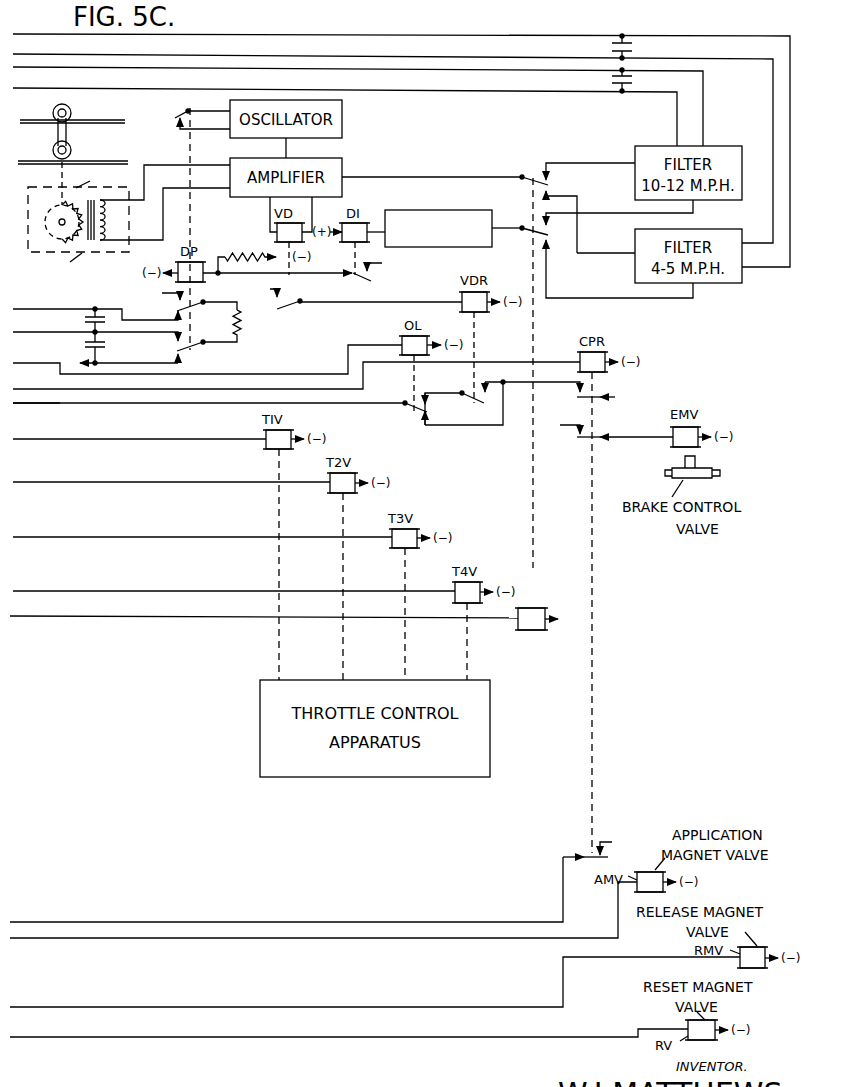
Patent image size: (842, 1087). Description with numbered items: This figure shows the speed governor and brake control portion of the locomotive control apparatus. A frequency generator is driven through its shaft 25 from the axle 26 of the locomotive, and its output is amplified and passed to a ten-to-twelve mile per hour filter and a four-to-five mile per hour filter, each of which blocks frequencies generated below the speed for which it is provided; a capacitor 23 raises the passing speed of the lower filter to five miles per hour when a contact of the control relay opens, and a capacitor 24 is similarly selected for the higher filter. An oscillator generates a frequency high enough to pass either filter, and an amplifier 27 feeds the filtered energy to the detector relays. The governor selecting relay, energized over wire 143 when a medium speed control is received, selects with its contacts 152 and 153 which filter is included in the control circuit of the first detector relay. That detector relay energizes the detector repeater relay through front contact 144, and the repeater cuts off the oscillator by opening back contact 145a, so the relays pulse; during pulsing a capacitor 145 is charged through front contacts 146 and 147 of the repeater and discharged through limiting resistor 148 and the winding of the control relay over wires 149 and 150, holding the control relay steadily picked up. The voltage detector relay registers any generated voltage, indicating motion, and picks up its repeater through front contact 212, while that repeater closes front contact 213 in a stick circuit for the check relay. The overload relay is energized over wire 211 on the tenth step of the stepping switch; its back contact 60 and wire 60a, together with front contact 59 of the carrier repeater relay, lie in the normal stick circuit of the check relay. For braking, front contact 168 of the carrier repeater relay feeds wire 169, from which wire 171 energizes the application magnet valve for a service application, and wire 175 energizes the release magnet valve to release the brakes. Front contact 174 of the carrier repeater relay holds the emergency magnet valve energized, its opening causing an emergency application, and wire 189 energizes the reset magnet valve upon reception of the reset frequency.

The capacitor 23 is at (628, 50).
The capacitor 24 is at (628, 84).
The shaft 25 is at (56, 174).
The axle 26 is at (68, 134).
The amplifier 27 is at (415, 209).
The front contact of carrier repeater relay CPR 59 is at (596, 393).
The back contact of overload relay OL 60 is at (393, 411).
The wire 60a is at (20, 404).
The wire 143 is at (22, 621).
The front contact of relay D1 144 is at (359, 277).
The capacitor 145 is at (100, 344).
The back contact of relay DP 145a is at (178, 114).
The front contact of relay DP 146 is at (186, 306).
The front contact of relay DP 147 is at (193, 348).
The limiting resistor 148 is at (241, 326).
The wire 149 is at (18, 310).
The wire 150 is at (18, 333).
The contact of relay GR 152 is at (524, 175).
The contact of relay GR 153 is at (530, 233).
The front contact of carrier repeater relay CPR 168 is at (585, 852).
The wire 169 is at (20, 923).
The wire 171 is at (20, 939).
The front contact of relay CPR 174 is at (595, 434).
The wire 175 is at (20, 1008).
The wire 189 is at (20, 1038).
The wire 211 is at (56, 367).
The front contact of relay VD 212 is at (290, 310).
The front contact of relay VDR 213 is at (502, 402).